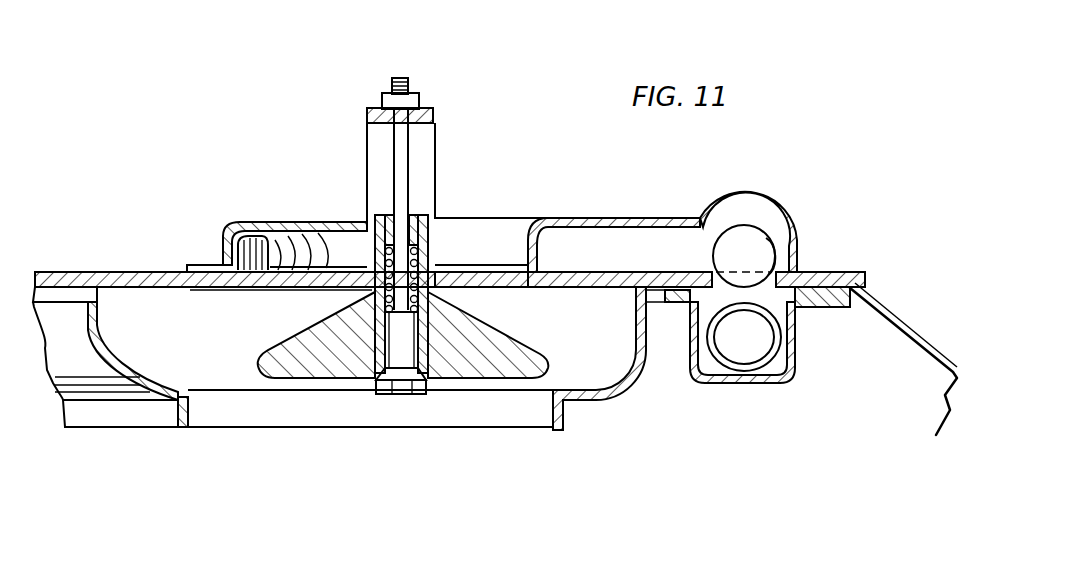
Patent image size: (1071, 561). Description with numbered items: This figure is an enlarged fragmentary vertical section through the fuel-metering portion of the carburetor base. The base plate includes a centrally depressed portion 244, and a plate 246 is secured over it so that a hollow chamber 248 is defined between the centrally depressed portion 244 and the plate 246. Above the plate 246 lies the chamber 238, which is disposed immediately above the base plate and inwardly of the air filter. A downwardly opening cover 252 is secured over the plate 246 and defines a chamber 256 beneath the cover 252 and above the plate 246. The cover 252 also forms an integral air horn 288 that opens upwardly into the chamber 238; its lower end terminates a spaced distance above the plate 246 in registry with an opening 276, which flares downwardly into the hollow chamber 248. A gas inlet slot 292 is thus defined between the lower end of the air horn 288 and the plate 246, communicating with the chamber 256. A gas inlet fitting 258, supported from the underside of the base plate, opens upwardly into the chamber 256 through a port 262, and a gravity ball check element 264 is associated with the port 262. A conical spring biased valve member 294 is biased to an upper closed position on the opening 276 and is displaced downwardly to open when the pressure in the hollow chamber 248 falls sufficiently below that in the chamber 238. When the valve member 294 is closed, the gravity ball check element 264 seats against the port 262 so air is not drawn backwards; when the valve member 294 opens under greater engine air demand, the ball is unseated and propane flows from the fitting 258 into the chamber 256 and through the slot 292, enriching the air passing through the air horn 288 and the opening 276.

The chamber 238 is at (548, 191).
The centrally depressed portion 244 is at (118, 378).
The plate 246 is at (140, 272).
The hollow chamber 248 is at (612, 349).
The cover 252 is at (628, 218).
The chamber 256 is at (632, 264).
The gas inlet fitting 258 is at (690, 365).
The port 262 is at (774, 252).
The gravity ball check element 264 is at (753, 232).
The opening 276 is at (283, 289).
The air horn 288 is at (306, 238).
The gas inlet slot 292 is at (495, 277).
The spring biased valve member 294 is at (318, 372).